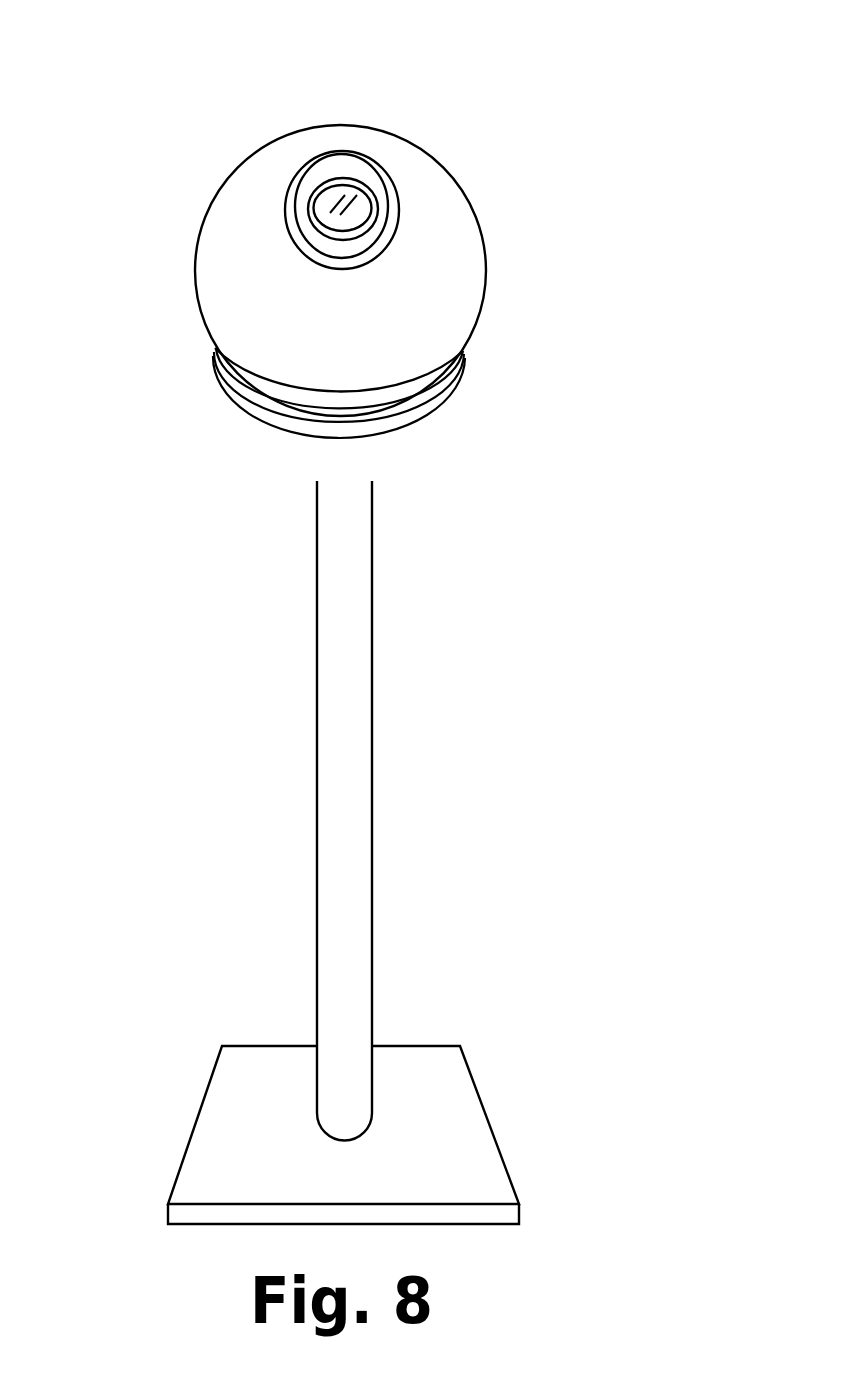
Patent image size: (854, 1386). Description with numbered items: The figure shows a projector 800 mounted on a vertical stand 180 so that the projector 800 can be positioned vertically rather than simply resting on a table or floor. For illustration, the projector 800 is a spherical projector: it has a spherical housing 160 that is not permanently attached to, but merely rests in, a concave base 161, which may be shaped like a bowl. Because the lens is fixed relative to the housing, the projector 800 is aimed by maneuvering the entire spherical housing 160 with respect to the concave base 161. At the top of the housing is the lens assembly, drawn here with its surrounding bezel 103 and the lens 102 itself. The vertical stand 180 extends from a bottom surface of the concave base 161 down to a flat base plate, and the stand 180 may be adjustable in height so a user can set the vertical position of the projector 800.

The projector 800 is at (527, 178).
The spherical housing 160 is at (452, 298).
The concave base 161 is at (248, 433).
The lens bezel ring 103 is at (347, 172).
The lens 102 is at (360, 198).
The vertical stand 180 is at (348, 725).